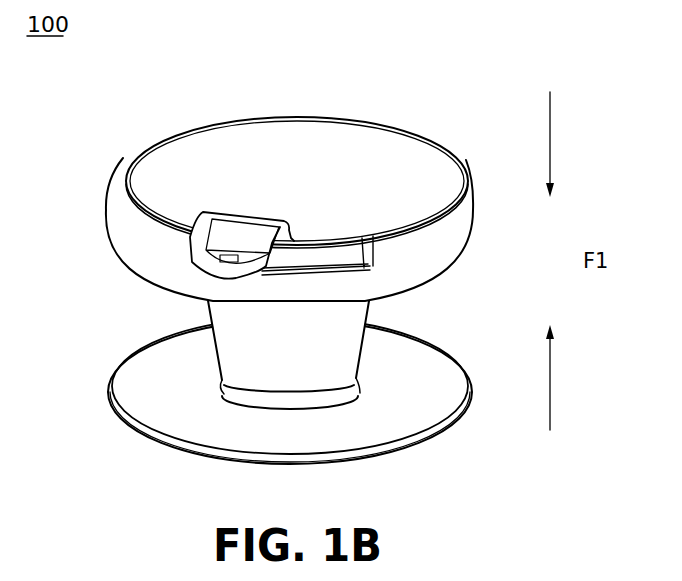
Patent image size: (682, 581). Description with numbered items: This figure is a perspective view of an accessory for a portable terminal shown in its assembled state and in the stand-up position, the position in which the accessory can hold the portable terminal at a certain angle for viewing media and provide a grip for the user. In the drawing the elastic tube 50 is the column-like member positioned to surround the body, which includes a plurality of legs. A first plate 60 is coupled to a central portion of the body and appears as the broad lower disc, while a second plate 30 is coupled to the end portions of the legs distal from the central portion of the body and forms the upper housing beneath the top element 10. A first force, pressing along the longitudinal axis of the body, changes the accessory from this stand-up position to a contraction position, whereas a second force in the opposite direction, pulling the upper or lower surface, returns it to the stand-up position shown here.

The upper disc / cap 10 is at (150, 160).
The second plate 30 is at (121, 229).
The elastic tube 50 is at (226, 317).
The first plate 60 is at (160, 414).